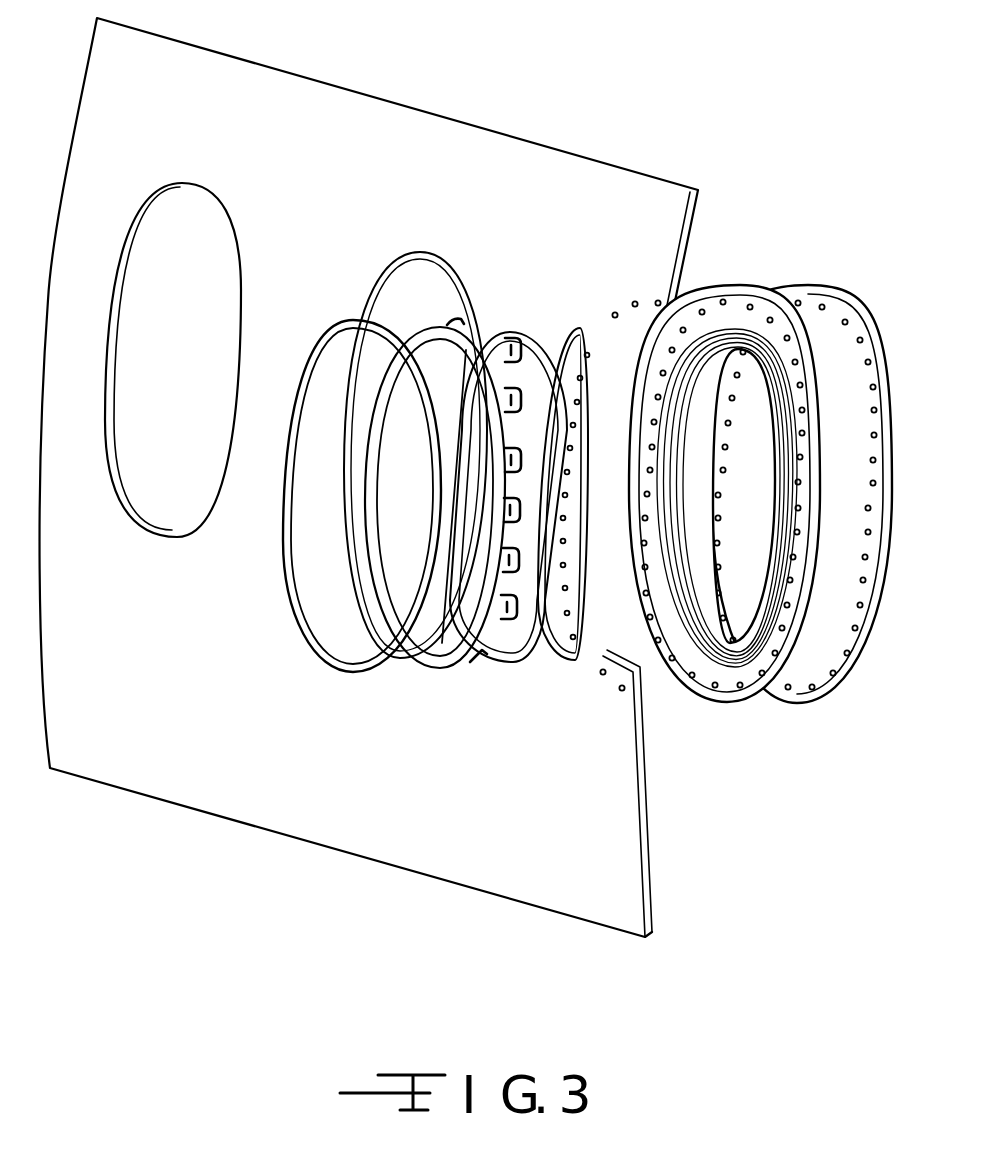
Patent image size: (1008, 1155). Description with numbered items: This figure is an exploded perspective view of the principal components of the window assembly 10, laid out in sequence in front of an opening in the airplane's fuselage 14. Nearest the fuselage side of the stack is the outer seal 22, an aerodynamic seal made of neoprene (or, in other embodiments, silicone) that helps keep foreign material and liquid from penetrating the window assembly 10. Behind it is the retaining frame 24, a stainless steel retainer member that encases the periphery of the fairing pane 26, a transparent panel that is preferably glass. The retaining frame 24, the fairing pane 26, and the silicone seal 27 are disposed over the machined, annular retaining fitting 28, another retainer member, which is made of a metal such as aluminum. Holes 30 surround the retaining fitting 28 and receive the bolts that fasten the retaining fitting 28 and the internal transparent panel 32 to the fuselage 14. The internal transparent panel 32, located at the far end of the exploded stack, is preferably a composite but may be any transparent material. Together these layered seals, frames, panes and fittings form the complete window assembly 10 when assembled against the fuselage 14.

The window assembly 10 is at (800, 160).
The fuselage 14 is at (432, 132).
The outer seal 22 is at (280, 553).
The retaining frame 24 is at (423, 662).
The fairing pane 26 is at (500, 665).
The silicone seal 27 is at (578, 668).
The retaining fitting 28 is at (728, 688).
The holes 30 is at (722, 303).
The internal transparent panel 32 is at (835, 608).